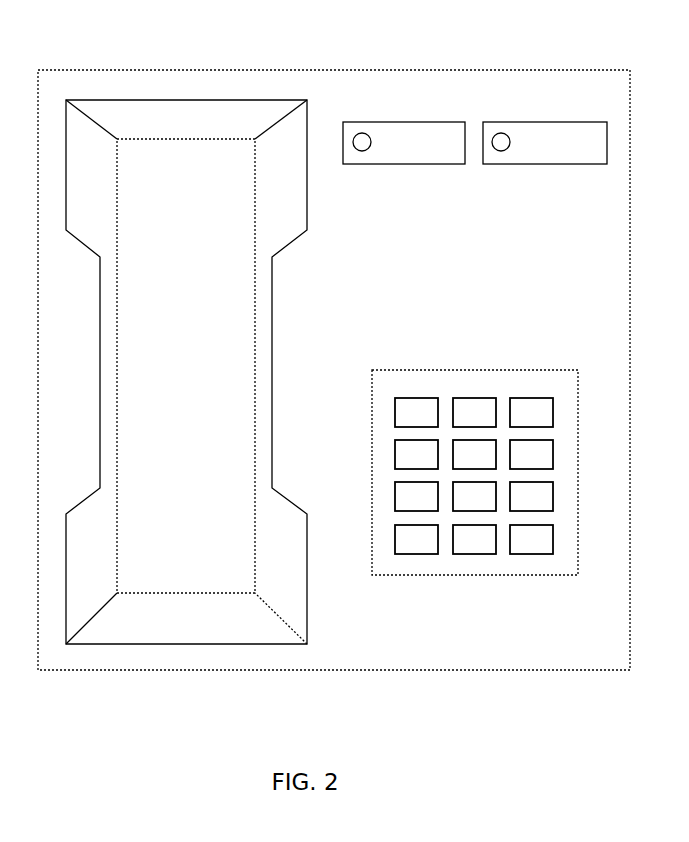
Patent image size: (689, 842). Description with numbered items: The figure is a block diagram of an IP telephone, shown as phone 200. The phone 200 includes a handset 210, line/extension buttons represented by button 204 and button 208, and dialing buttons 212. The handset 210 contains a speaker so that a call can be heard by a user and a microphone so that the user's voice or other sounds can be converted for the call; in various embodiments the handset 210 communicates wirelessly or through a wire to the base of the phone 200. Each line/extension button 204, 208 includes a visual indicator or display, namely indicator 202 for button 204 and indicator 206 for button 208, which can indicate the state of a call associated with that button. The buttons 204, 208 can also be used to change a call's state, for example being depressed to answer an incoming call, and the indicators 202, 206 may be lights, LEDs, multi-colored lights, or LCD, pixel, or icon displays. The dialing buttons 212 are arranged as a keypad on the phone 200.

The phone 200 is at (283, 80).
The visual indicator 202 is at (358, 132).
The line/extension button 204 is at (422, 128).
The visual indicator 206 is at (495, 130).
The line/extension button 208 is at (562, 128).
The handset 210 is at (183, 368).
The dialing buttons 212 is at (470, 378).